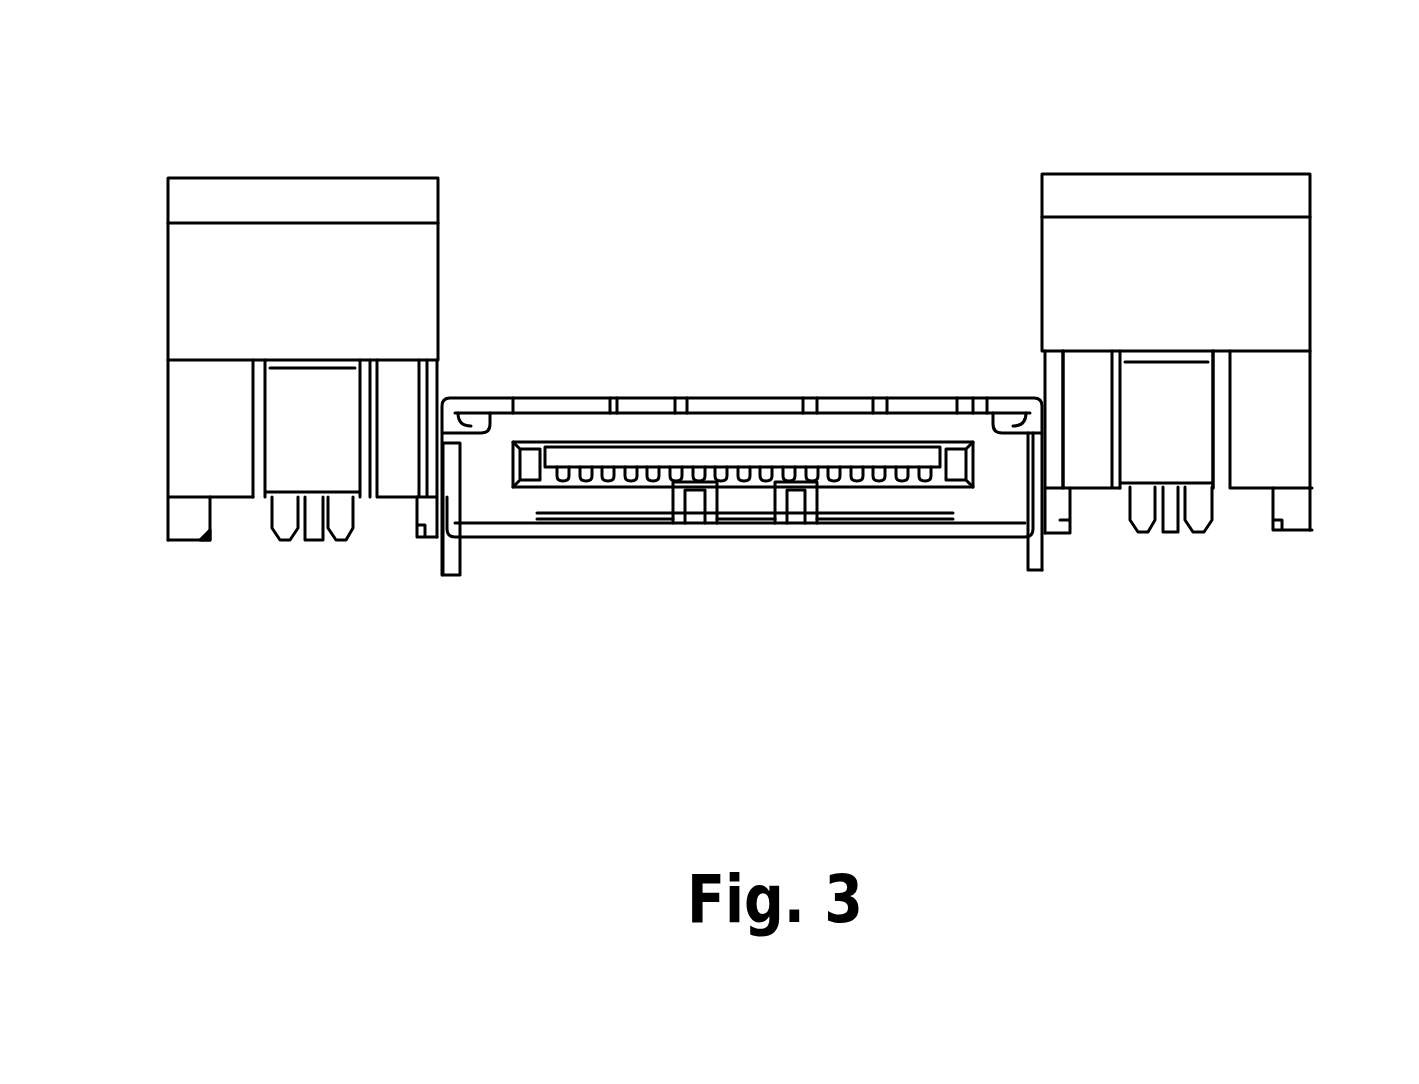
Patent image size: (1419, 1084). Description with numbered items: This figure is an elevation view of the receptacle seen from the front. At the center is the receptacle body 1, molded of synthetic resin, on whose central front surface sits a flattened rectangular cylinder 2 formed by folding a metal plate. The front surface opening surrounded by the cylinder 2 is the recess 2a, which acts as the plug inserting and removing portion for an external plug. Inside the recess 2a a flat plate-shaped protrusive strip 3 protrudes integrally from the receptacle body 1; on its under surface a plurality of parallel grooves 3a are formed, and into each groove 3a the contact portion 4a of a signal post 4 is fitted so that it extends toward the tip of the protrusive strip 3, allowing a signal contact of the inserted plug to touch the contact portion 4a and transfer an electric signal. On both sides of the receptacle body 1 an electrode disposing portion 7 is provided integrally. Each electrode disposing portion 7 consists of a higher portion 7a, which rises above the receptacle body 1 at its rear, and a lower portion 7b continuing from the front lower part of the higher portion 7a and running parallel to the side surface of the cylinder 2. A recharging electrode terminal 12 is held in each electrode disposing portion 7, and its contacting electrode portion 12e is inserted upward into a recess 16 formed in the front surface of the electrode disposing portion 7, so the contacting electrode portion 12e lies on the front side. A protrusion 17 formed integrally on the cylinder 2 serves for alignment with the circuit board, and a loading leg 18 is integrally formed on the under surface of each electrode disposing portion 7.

The receptacle body 1 is at (473, 473).
The cylinder 2 is at (740, 402).
The recess 2a is at (992, 507).
The protrusive strip 3 is at (868, 452).
The grooves 3a is at (552, 477).
The signal post 4 is at (557, 452).
The contact portion 4a is at (552, 460).
The electrode disposing portion 7 is at (403, 242).
The higher portion 7a is at (243, 248).
The lower portion 7b is at (203, 382).
The recharging electrode terminal 12 is at (338, 390).
The contacting electrode portion 12e is at (335, 458).
The recess 16 is at (263, 473).
The protrusion 17 is at (452, 577).
The loading leg 18 is at (190, 517).